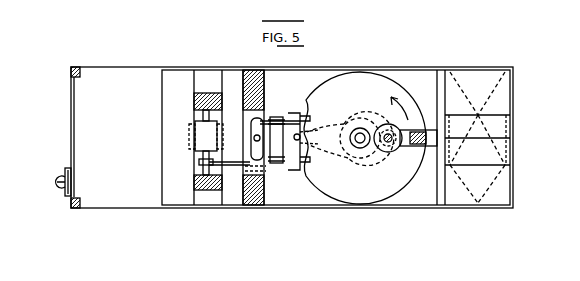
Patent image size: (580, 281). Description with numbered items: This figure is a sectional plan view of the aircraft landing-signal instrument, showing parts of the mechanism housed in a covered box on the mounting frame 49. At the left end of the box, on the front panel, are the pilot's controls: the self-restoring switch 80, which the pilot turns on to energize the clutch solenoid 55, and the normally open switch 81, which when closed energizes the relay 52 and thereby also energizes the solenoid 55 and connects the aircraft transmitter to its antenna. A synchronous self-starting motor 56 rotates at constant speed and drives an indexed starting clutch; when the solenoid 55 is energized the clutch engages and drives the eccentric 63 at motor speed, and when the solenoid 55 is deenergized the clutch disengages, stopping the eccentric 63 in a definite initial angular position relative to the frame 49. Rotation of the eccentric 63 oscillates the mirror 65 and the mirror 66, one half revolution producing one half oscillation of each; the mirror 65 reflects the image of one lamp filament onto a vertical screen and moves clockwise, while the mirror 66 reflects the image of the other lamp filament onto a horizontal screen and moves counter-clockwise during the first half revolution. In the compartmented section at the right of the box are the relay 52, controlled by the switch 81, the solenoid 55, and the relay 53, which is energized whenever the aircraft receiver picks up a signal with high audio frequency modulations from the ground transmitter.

The mounting frame 49 is at (445, 78).
The relay 52 is at (500, 180).
The relay 53 is at (497, 100).
The solenoid 55 is at (493, 131).
The synchronous self-starting motor 56 is at (392, 188).
The eccentric 63 is at (337, 144).
The mirror 65 is at (190, 147).
The mirror 66 is at (250, 158).
The switch 80 is at (64, 190).
The switch 81 is at (66, 172).